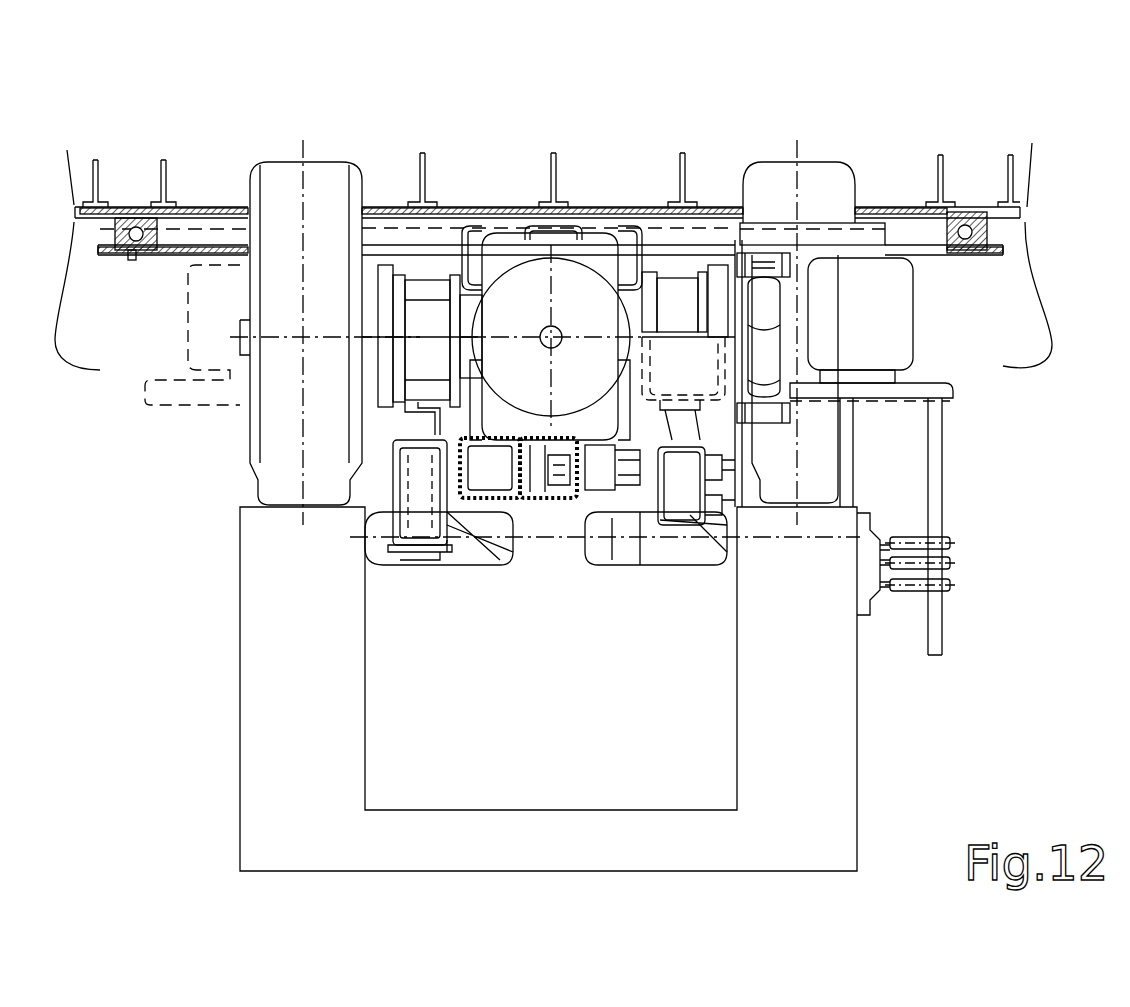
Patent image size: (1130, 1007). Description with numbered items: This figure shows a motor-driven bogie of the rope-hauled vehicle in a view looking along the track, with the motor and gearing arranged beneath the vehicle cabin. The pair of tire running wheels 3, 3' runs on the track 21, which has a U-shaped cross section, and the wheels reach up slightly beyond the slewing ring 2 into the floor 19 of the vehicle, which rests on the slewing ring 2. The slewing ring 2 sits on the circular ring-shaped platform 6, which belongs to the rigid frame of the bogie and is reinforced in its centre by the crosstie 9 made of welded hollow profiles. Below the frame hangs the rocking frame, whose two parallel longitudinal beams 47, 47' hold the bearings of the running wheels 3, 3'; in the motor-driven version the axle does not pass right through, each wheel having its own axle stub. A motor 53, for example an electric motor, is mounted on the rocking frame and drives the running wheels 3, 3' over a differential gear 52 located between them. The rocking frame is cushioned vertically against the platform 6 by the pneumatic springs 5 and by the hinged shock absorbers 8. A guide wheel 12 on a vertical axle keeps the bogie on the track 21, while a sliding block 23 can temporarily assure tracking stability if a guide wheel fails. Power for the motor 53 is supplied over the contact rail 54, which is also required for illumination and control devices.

The slewing ring 2 is at (987, 232).
The running wheel 3 is at (253, 332).
The running wheel 3' is at (926, 332).
The pneumatic spring 5 is at (890, 291).
The platform 6 is at (1005, 252).
The shock absorber 8 is at (763, 369).
The crosstie 9 is at (623, 225).
The guide wheel 12 is at (380, 548).
The floor 19 is at (943, 178).
The track 21 is at (805, 752).
The sliding block 23 is at (667, 528).
The longitudinal beam 47 is at (397, 244).
The longitudinal beam 47' is at (699, 247).
The differential gear 52 is at (513, 248).
The motor 53 is at (582, 295).
The contact rail 54 is at (950, 583).